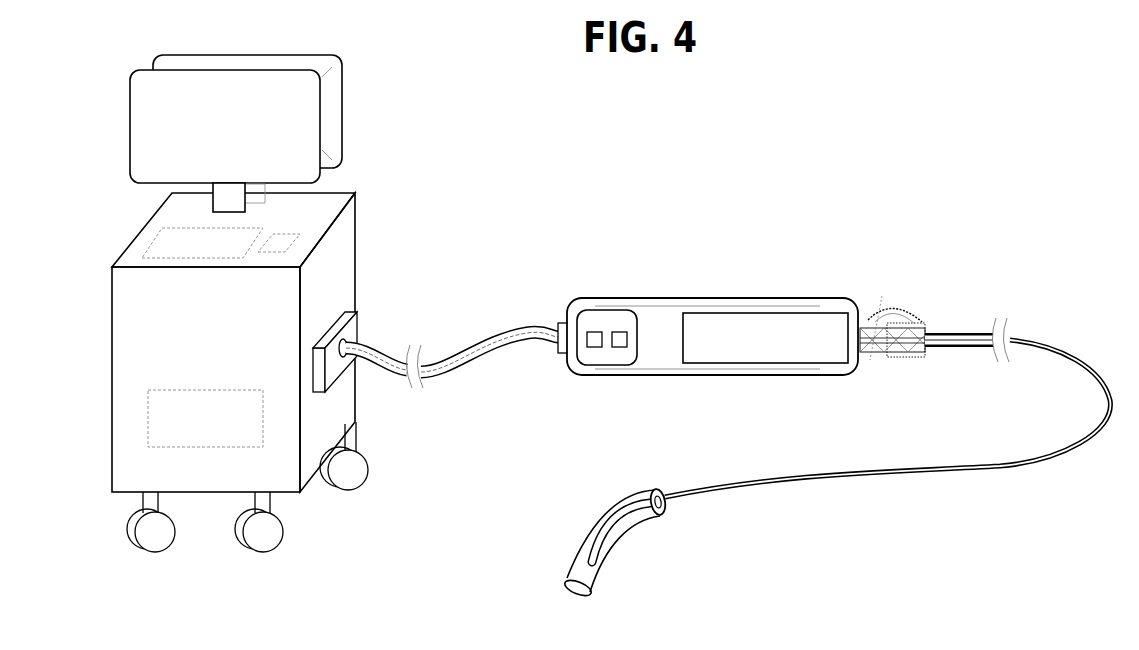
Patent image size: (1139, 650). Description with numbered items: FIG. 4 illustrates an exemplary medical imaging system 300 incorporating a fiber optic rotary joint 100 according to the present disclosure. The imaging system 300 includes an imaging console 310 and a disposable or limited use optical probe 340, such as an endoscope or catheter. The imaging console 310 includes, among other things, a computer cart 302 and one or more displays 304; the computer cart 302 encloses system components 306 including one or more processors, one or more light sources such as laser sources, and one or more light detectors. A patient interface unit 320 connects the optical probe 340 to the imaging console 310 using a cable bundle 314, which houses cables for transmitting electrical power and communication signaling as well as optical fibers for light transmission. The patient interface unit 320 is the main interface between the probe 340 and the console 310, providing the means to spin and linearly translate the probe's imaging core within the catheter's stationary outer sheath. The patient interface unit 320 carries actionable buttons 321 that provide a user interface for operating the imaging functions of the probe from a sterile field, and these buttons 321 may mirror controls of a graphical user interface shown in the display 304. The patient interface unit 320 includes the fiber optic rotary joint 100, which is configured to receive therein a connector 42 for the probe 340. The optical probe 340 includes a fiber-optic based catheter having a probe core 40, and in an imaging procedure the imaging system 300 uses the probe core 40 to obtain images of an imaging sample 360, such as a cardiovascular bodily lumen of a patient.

The medical imaging system 300 is at (585, 135).
The imaging console 310 is at (283, 303).
The computer cart 302 is at (187, 344).
The display 304 is at (206, 139).
The system components 306 is at (187, 430).
The cable bundle 314 is at (447, 356).
The patient interface unit 320 is at (708, 287).
The actionable buttons 321 is at (592, 318).
The fiber optic rotary joint 100 is at (807, 323).
The connector 42 is at (897, 313).
The optical probe 340 is at (978, 322).
The probe core 40 is at (1083, 364).
The imaging sample 360 is at (642, 532).